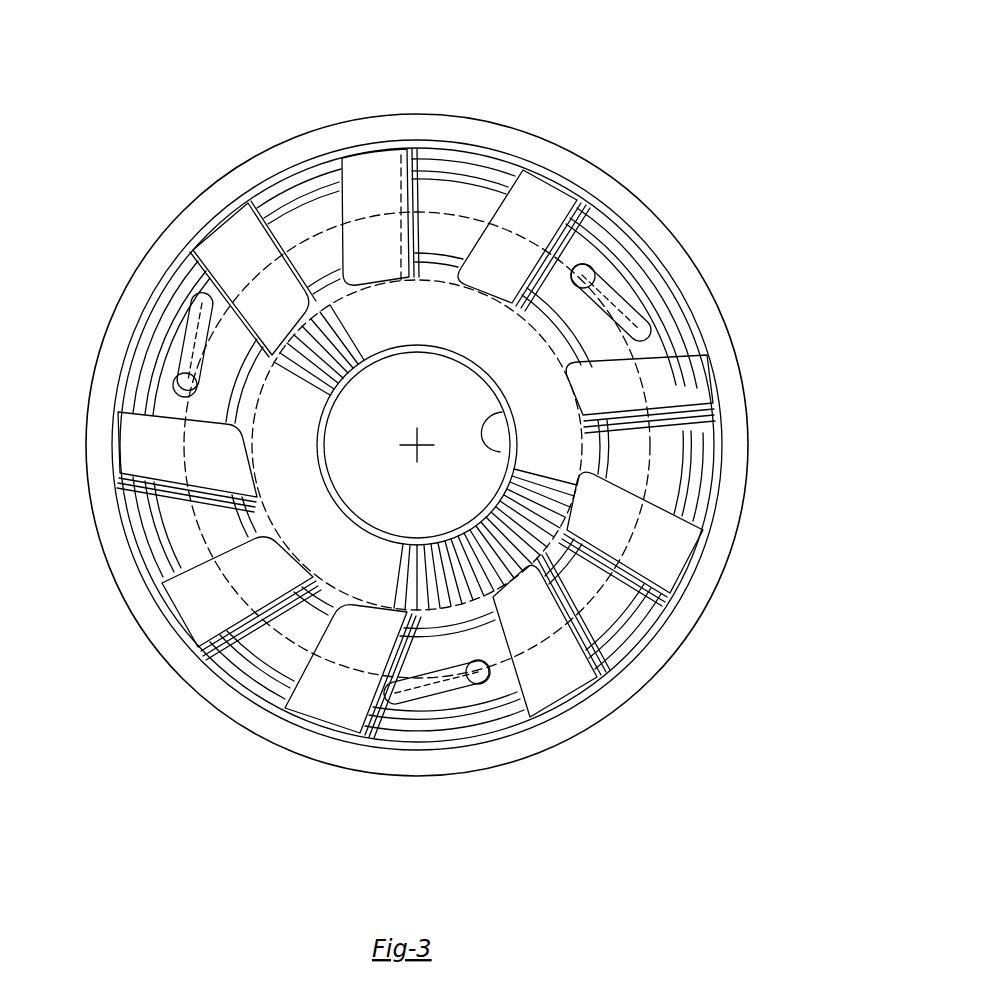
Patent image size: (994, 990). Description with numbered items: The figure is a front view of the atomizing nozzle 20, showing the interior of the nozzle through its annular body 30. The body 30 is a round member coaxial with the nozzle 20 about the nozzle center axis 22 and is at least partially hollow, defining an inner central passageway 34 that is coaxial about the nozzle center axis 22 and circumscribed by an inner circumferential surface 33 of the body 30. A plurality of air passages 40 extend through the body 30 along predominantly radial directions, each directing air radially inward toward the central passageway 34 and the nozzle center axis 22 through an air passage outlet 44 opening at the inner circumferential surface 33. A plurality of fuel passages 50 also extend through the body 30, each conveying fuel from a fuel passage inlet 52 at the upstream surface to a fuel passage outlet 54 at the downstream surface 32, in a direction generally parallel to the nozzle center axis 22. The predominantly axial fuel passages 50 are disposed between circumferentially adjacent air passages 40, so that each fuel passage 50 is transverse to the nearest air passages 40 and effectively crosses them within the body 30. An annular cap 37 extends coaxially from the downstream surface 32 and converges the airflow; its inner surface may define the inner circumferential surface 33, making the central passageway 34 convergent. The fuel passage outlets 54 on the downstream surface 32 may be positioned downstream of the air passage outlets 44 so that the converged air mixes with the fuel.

The nozzle 20 is at (162, 700).
The nozzle center axis 22 is at (418, 447).
The annular body 30 is at (672, 662).
The downstream surface 32 is at (418, 445).
The inner circumferential surface 33 is at (497, 452).
The inner central passageway 34 is at (417, 445).
The cap 37 is at (417, 445).
The air passages 40 is at (357, 195).
The air passage outlet 44 is at (452, 278).
The fuel passages 50 is at (188, 344).
The fuel passage inlet 52 is at (200, 302).
The fuel passage outlet 54 is at (182, 384).